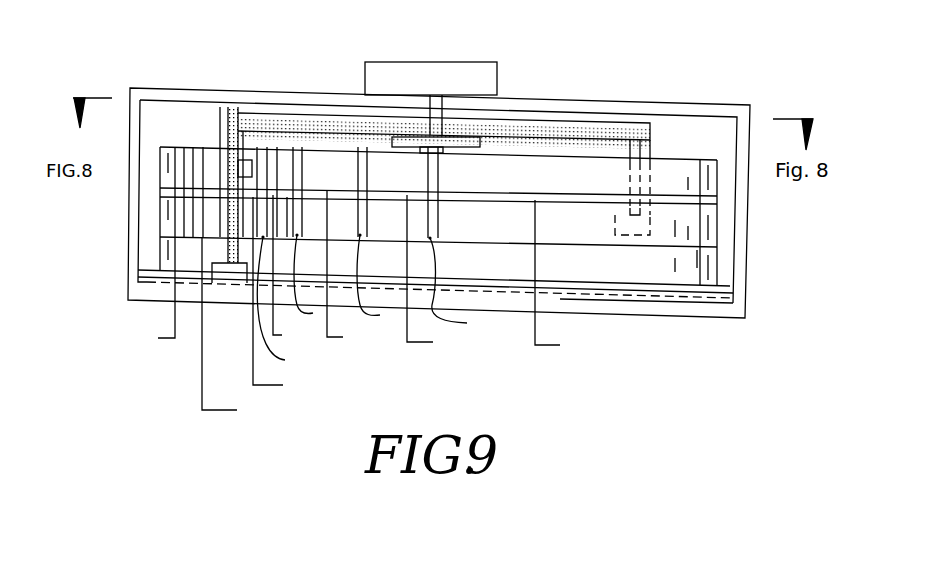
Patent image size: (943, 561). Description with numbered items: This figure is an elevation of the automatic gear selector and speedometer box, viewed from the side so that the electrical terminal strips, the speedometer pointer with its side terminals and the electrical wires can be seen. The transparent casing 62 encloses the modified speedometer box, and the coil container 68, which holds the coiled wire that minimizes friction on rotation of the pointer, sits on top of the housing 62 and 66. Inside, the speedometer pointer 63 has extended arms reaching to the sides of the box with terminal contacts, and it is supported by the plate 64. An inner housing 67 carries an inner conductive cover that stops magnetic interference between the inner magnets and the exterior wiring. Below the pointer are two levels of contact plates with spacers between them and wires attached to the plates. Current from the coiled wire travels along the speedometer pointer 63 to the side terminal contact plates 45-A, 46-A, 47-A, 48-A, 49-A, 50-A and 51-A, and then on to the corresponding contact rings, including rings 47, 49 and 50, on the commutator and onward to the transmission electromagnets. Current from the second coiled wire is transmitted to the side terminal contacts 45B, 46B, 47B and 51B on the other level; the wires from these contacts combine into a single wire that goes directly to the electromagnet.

The transparent casing 62 is at (652, 98).
The speedometer pointer 63 is at (668, 139).
The plate 64 is at (485, 131).
The housing 66 is at (672, 312).
The inner housing 67 is at (728, 263).
The casing 68 is at (456, 60).
The contact ring 50 is at (177, 187).
The side terminal contact plate 50-A is at (136, 308).
The contact ring 49 is at (203, 187).
The side terminal contact plate 49-A is at (247, 329).
The side terminal contact plate 48-A is at (278, 251).
The contact ring 47 is at (277, 187).
The side terminal contact plate 47-A is at (295, 270).
The side terminal contact 47B is at (295, 303).
The side terminal contact plate 46-A is at (344, 249).
The side terminal contact 46B is at (300, 218).
The side terminal contact plate 45-A is at (434, 251).
The side terminal contact 45B is at (363, 218).
The side terminal contact plate 51-A is at (559, 261).
The side terminal contact 51B is at (433, 222).